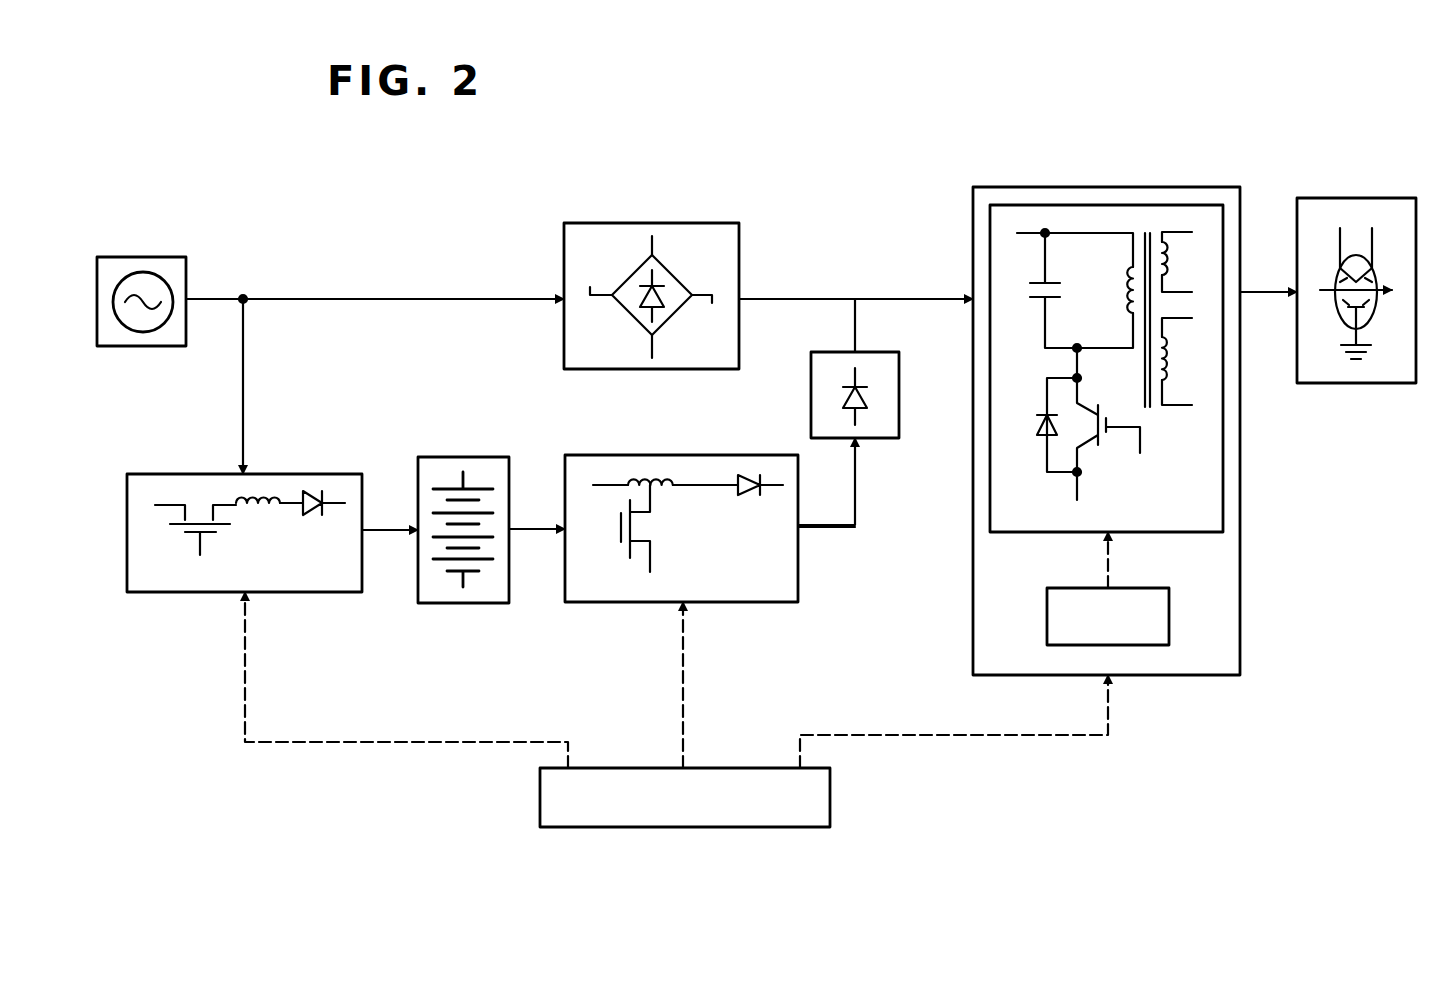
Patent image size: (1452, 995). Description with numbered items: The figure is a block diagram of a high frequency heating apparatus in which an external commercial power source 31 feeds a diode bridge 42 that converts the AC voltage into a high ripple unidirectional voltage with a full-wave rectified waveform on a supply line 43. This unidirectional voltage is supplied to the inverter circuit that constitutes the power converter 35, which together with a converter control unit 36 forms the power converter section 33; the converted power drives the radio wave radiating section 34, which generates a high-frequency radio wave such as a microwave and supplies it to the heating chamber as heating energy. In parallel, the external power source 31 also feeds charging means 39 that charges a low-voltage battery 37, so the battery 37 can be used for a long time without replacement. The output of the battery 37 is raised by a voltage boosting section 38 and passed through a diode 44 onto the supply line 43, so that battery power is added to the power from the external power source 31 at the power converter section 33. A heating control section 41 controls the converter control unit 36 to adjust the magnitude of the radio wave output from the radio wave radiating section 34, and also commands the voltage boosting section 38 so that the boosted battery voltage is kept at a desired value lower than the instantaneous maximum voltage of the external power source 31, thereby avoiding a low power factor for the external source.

The external power source 31 is at (143, 257).
The power converter section 33 is at (1018, 187).
The radio wave radiating section 34 is at (1355, 383).
The power converter 35 is at (1158, 205).
The converter control unit 36 is at (1169, 617).
The battery 37 is at (463, 457).
The voltage boosting section 38 is at (626, 455).
The charging means 39 is at (325, 474).
The heating control section 41 is at (830, 797).
The diode bridge 42 is at (652, 223).
The supply line 43 is at (805, 299).
The diode 44 is at (811, 401).